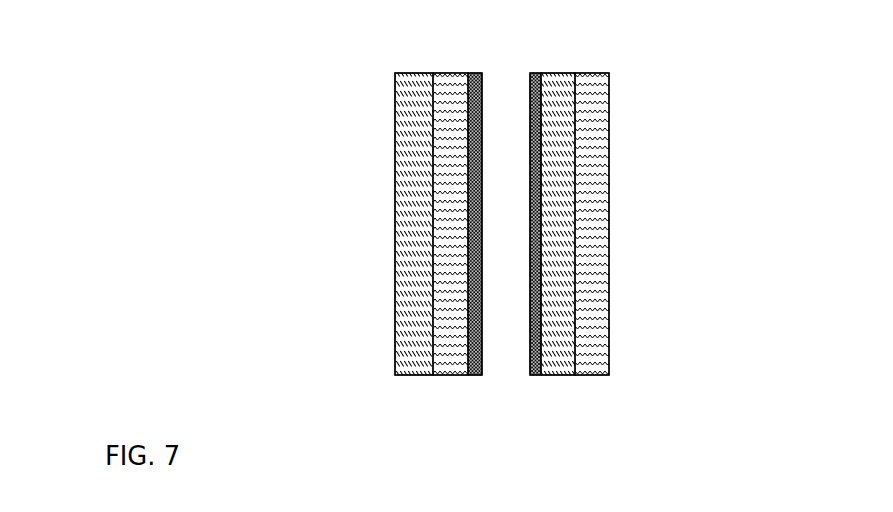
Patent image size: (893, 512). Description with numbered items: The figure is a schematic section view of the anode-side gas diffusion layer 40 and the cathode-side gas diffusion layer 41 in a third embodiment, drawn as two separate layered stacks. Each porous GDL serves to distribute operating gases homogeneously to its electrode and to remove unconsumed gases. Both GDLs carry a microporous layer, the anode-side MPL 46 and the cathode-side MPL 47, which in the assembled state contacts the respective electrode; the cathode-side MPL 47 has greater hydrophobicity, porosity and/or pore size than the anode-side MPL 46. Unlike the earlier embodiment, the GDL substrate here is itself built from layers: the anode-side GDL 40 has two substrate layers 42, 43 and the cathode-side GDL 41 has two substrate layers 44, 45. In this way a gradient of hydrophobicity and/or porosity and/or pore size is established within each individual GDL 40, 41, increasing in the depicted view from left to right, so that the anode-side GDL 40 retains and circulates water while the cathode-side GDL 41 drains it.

The anode-side gas diffusion layer 40 is at (375, 261).
The cathode-side gas diffusion layer 41 is at (624, 261).
The first layer of anode-side GDL substrate 42 is at (412, 349).
The second layer of anode-side GDL substrate 43 is at (453, 352).
The first layer of cathode-side GDL substrate 44 is at (560, 352).
The second layer of cathode-side GDL substrate 45 is at (592, 352).
The anode-side microporous layer 46 is at (475, 348).
The cathode-side microporous layer 47 is at (534, 348).